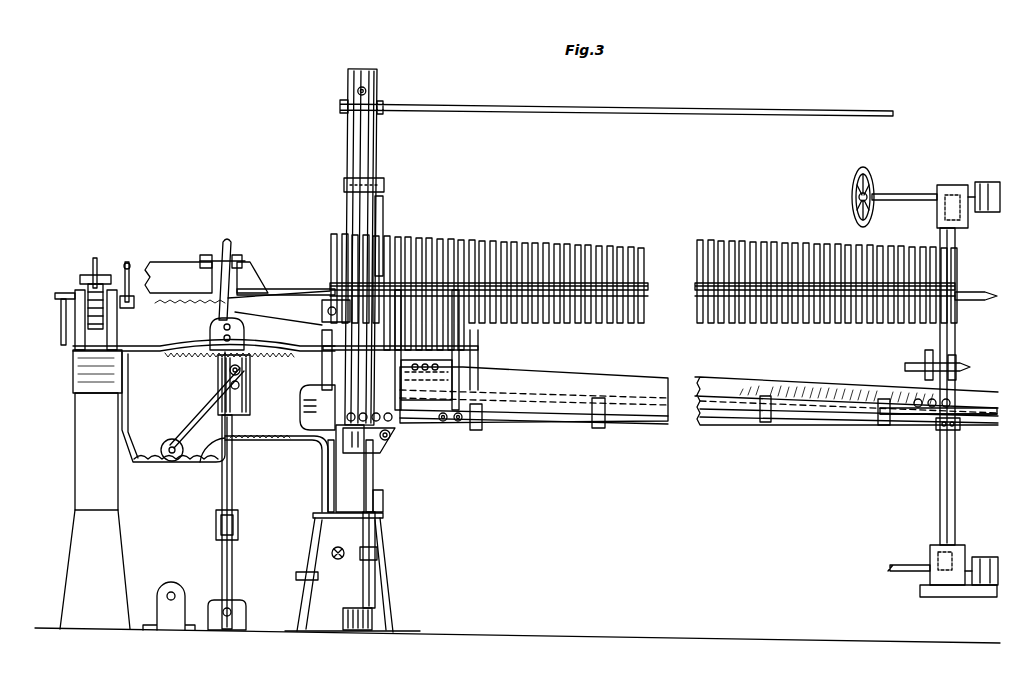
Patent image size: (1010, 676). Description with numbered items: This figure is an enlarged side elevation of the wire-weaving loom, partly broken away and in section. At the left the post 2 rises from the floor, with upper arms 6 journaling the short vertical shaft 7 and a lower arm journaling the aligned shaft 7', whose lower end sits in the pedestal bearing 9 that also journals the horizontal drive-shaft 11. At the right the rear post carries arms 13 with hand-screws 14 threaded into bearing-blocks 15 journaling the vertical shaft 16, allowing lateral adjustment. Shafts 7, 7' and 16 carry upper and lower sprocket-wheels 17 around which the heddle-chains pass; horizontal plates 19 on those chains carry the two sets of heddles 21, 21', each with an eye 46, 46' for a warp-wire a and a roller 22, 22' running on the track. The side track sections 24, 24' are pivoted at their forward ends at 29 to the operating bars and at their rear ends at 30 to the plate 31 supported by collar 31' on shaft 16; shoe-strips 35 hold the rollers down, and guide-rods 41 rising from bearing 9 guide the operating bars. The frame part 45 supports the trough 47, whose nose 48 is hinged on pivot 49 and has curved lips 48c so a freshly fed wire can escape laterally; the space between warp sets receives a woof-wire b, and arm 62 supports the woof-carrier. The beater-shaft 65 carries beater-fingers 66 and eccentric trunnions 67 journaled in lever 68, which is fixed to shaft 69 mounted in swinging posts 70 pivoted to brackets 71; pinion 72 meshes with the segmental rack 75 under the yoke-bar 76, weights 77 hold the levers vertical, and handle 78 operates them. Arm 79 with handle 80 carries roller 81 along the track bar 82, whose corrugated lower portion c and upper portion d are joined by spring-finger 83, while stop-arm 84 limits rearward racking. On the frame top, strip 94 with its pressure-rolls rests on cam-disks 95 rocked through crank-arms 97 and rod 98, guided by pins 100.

The post 2 is at (378, 146).
The upper arm 6 is at (344, 185).
The vertical shaft 7 is at (388, 235).
The vertical shaft 7' is at (390, 501).
The pedestal bearing 9 is at (314, 545).
The horizontal drive-shaft 11 is at (305, 580).
The arm 13 is at (986, 182).
The hand-screw 14 is at (912, 194).
The bearing-block 15 is at (937, 212).
The vertical shaft 16 is at (940, 472).
The sprocket-wheel 17 is at (972, 295).
The horizontal plate 19 is at (650, 285).
The heddle 21 is at (632, 289).
The heddle 21' is at (466, 223).
The roller 22 is at (407, 431).
The roller 22' is at (940, 402).
The side section 24 is at (699, 429).
The side section 24' is at (699, 387).
The pivotal connection 29 is at (390, 440).
The pivotal connection 30 is at (600, 428).
The plate 31 is at (938, 427).
The collar 31' is at (939, 431).
The shoe-strip 35 is at (543, 416).
The guide-rod 41 is at (328, 480).
The frame part 45 is at (75, 375).
The aperture 46 is at (530, 355).
The aperture 46' is at (439, 350).
The trough 47 is at (178, 277).
The nose 48 is at (300, 289).
The lip 48c is at (199, 280).
The pivot 49 is at (212, 255).
The arm 62 is at (326, 322).
The beater-shaft 65 is at (210, 336).
The beater-finger 66 is at (240, 322).
The trunnion 67 is at (242, 337).
The lever 68 is at (250, 396).
The shaft 69 is at (228, 385).
The swinging post 70 is at (233, 566).
The bracket 71 is at (240, 612).
The pinion 72 is at (242, 370).
The segmental rack 75 is at (185, 358).
The yoke-bar 76 is at (147, 353).
The weight 77 is at (238, 522).
The operating-handle 78 is at (231, 246).
The arm 79 is at (188, 420).
The handle 80 is at (170, 464).
The roller 81 is at (161, 449).
The bar 82 is at (140, 464).
The spring-finger 83 is at (212, 452).
The stop-arm 84 is at (308, 405).
The strip 94 is at (80, 278).
The cam-disk 95 is at (60, 294).
The crank-arm 97 is at (134, 296).
The rod 98 is at (132, 273).
The pin 100 is at (97, 371).
The warp-wire a is at (315, 294).
The woof-wire b is at (165, 306).
The lower track portion c is at (192, 464).
The upper track portion d is at (278, 441).